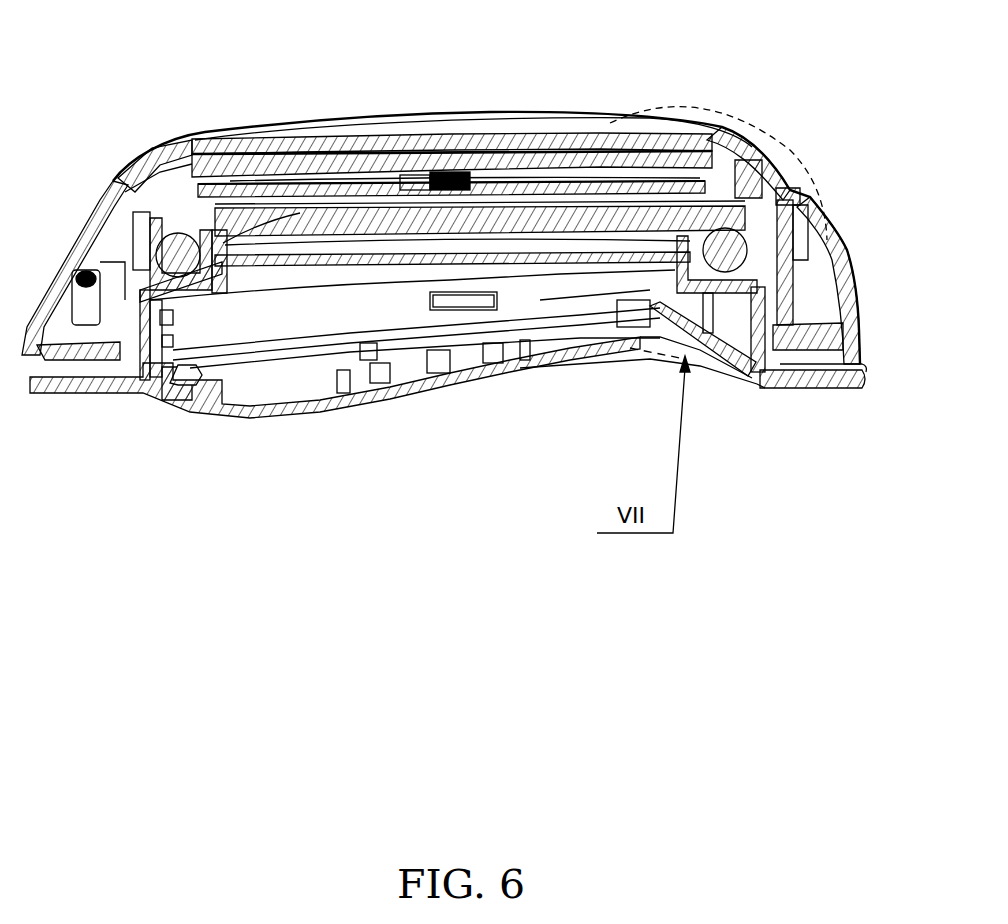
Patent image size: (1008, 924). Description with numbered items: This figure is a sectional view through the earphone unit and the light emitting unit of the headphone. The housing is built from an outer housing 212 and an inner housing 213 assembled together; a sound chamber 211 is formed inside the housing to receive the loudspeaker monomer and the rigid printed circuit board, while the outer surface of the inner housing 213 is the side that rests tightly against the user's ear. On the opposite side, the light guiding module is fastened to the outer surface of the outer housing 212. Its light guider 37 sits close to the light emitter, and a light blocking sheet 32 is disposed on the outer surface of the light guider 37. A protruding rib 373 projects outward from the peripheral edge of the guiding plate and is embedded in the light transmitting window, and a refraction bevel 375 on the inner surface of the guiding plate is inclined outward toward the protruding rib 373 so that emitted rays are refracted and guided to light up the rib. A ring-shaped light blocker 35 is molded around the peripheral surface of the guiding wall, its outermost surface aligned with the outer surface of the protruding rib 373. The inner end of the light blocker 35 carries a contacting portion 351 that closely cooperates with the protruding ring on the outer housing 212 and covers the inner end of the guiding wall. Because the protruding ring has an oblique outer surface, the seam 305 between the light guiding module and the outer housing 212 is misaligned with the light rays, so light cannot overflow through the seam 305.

The light blocking sheet 32 is at (580, 125).
The light blocker 35 is at (768, 160).
The light guider 37 is at (387, 165).
The sound chamber 211 is at (765, 250).
The outer housing 212 is at (858, 330).
The inner housing 213 is at (327, 408).
The seam 305 is at (753, 156).
The contacting portion 351 is at (787, 197).
The protruding rib 373 is at (703, 170).
The refraction bevel 375 is at (165, 178).